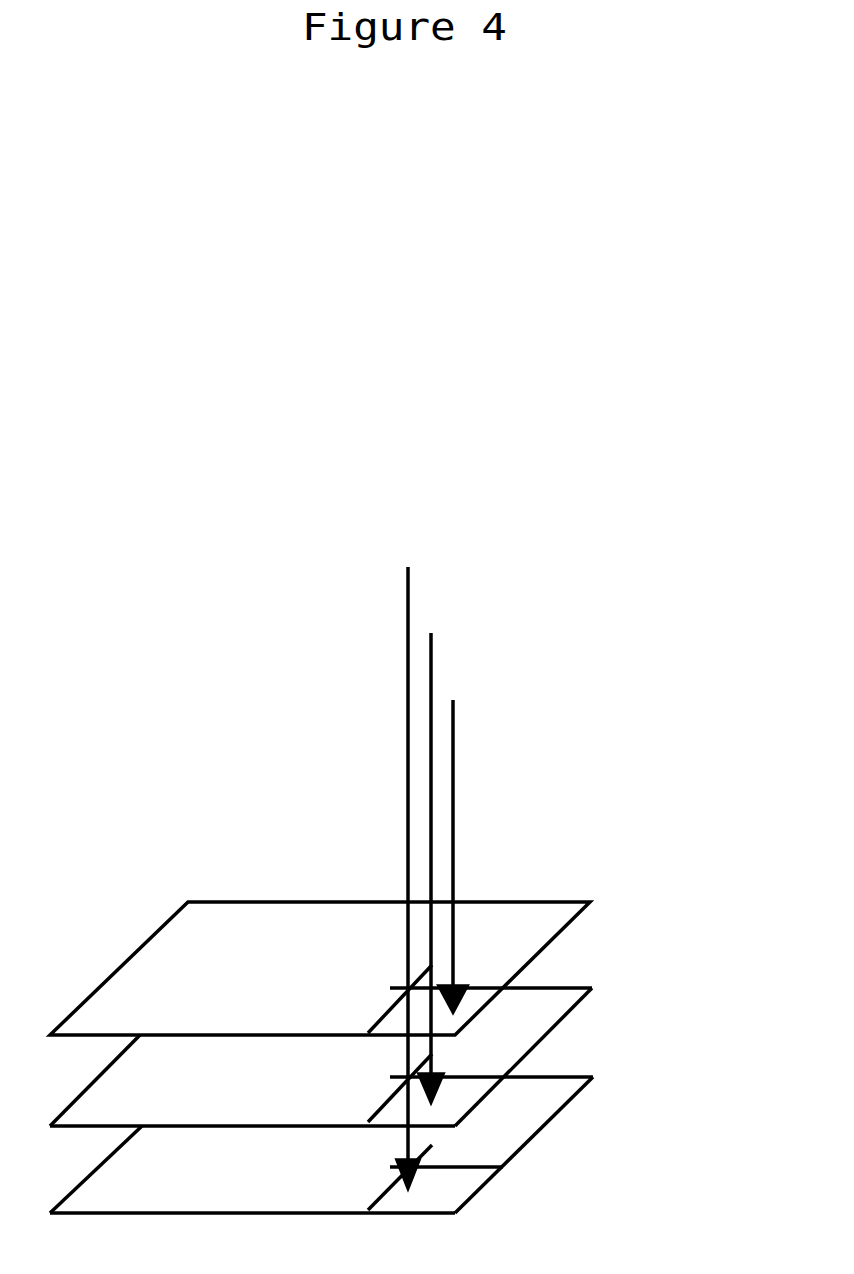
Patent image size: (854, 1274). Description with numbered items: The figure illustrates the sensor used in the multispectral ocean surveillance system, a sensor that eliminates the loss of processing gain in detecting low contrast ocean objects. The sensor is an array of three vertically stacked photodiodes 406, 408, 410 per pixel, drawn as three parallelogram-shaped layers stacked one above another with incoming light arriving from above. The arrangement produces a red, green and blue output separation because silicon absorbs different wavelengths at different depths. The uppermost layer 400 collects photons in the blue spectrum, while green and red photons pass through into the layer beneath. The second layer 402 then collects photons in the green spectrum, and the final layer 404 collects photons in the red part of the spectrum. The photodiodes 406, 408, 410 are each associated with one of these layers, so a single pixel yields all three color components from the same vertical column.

The uppermost layer 400 is at (483, 1012).
The second layer 402 is at (483, 1100).
The final layer 404 is at (487, 1188).
The photodiode 406 is at (364, 995).
The photodiode 408 is at (364, 1084).
The photodiode 410 is at (364, 1171).